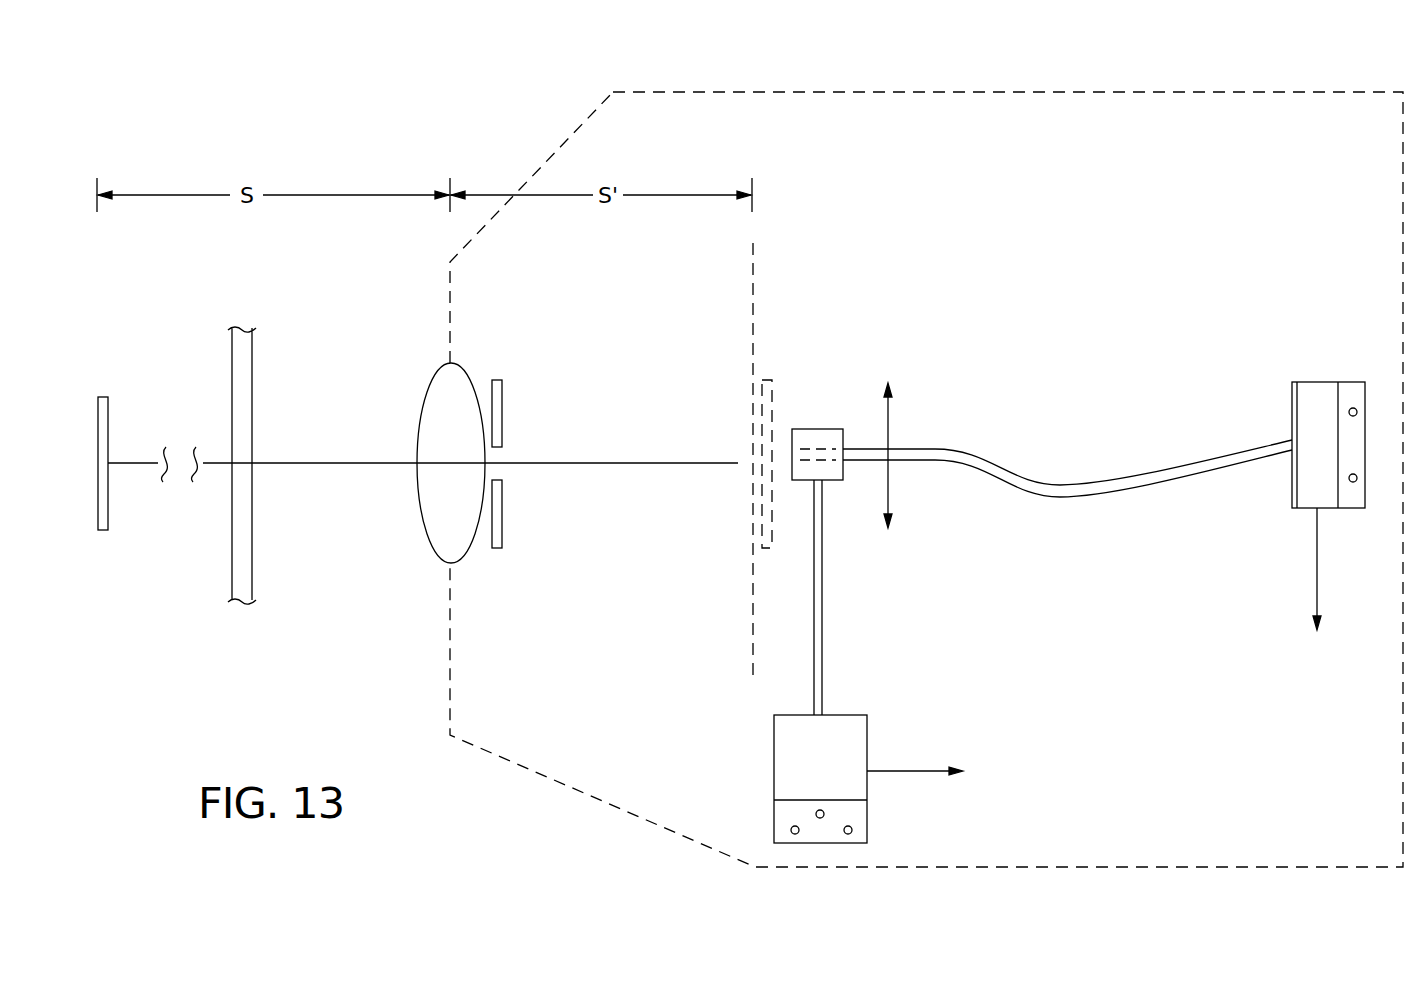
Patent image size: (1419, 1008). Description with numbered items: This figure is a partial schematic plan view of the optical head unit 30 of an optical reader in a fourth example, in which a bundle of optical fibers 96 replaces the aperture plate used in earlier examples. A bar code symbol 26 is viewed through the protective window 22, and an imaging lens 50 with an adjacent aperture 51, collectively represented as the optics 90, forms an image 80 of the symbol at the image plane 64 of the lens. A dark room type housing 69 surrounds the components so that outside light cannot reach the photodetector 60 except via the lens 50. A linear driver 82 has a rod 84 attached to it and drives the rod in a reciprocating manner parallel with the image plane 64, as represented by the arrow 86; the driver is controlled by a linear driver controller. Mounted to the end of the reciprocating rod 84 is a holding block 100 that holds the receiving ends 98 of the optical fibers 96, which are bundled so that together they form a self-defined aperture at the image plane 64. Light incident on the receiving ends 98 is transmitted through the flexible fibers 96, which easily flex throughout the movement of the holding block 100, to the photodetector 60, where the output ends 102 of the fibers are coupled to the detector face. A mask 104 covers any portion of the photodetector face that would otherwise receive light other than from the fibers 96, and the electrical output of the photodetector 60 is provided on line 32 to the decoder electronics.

The protective window 22 is at (232, 363).
The bar code symbol 26 is at (108, 422).
The optical head unit 30 is at (326, 158).
The line 32 is at (1317, 552).
The imaging lens 50 is at (433, 377).
The aperture 51 is at (521, 426).
The photodetector 60 is at (1320, 392).
The image plane 64 is at (752, 605).
The dark room type housing 69 is at (650, 92).
The image 80 is at (758, 425).
The linear driver 82 is at (867, 733).
The rod 84 is at (822, 598).
The arrow 86 is at (888, 479).
The optics 90 is at (484, 578).
The optical fibers 96 is at (1075, 485).
The receiving ends 98 is at (793, 455).
The holding block 100 is at (815, 429).
The ends 102 is at (1292, 440).
The mask 104 is at (1292, 478).